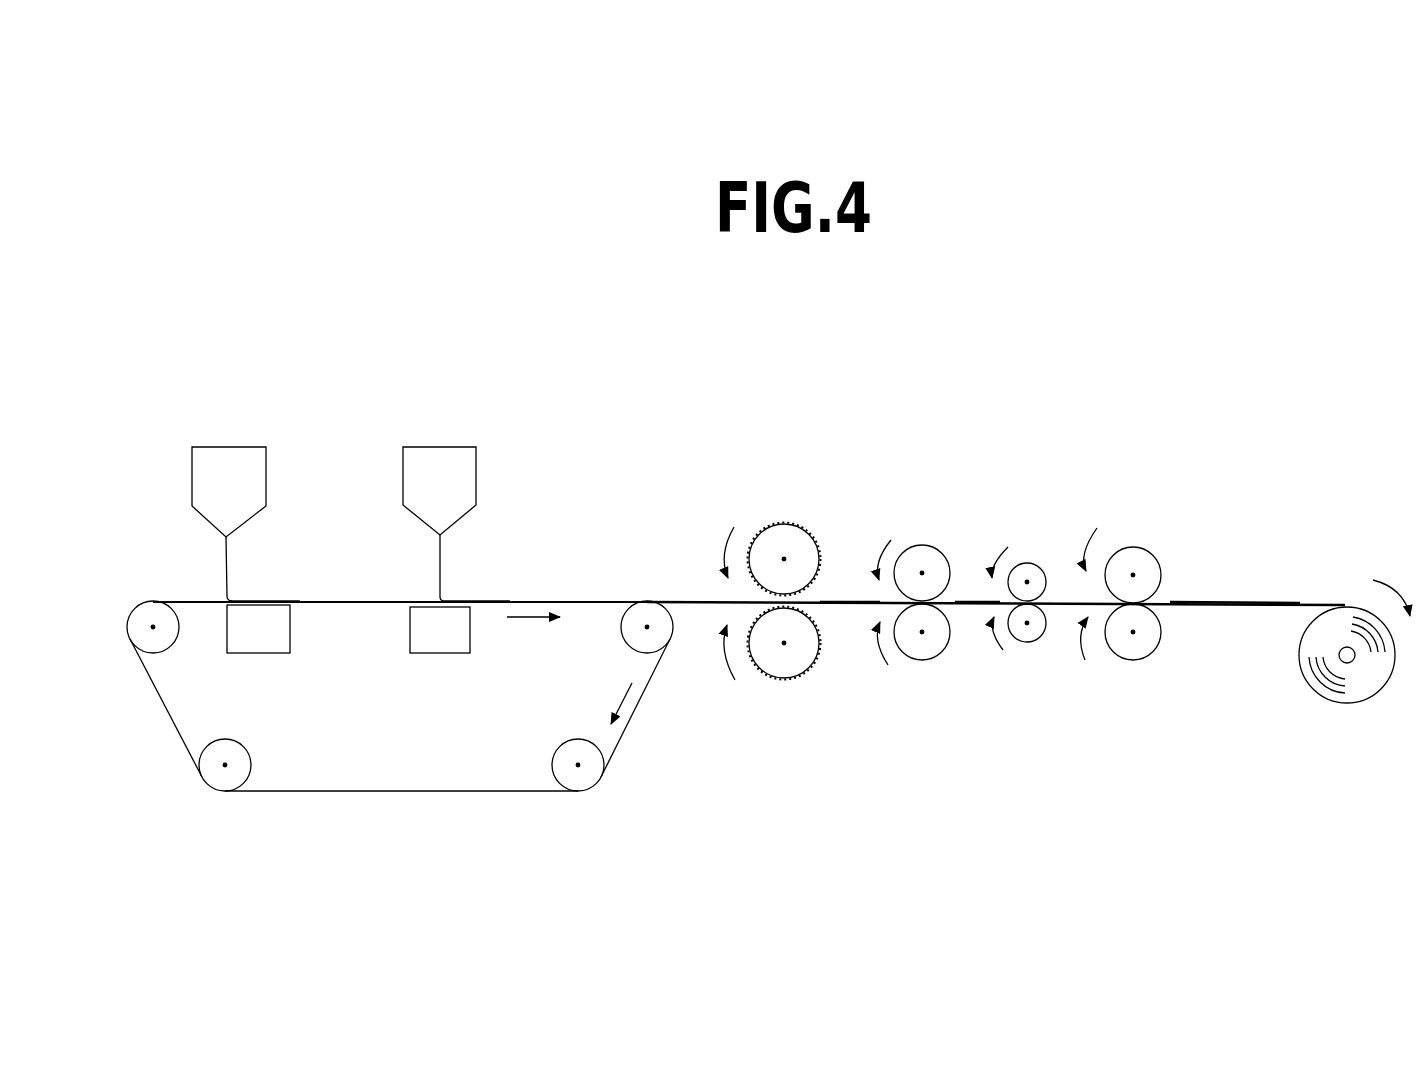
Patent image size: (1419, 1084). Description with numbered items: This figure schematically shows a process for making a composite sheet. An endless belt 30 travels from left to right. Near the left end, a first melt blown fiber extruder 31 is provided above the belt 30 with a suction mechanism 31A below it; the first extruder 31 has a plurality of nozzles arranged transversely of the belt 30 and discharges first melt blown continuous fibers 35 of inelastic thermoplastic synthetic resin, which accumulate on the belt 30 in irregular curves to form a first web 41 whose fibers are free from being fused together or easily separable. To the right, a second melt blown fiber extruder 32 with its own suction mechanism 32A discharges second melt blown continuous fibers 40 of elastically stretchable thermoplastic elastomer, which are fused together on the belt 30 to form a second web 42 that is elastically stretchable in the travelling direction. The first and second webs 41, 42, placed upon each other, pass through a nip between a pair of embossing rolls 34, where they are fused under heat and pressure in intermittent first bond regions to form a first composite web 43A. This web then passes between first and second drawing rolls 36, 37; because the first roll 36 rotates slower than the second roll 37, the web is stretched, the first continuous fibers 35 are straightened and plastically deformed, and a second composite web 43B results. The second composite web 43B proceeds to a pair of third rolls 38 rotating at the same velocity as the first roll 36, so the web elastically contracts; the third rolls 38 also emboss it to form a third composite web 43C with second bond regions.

The endless belt 30 is at (166, 712).
The first melt blown fiber extruder 31 is at (192, 442).
The second melt blown fiber extruder 32 is at (404, 440).
The suction mechanism 31A is at (273, 653).
The suction mechanism 32A is at (445, 653).
The embossing rolls 34 is at (788, 523).
The first melt blown continuous fibers 35 is at (226, 552).
The first drawing roll 36 is at (925, 545).
The second drawing roll 37 is at (1032, 563).
The third rolls 38 is at (1148, 548).
The second melt blown continuous fibers 40 is at (440, 563).
The first web 41 is at (302, 594).
The second web 42 is at (509, 588).
The first composite web 43A is at (843, 610).
The second composite web 43B is at (966, 612).
The third composite web 43C is at (1214, 612).